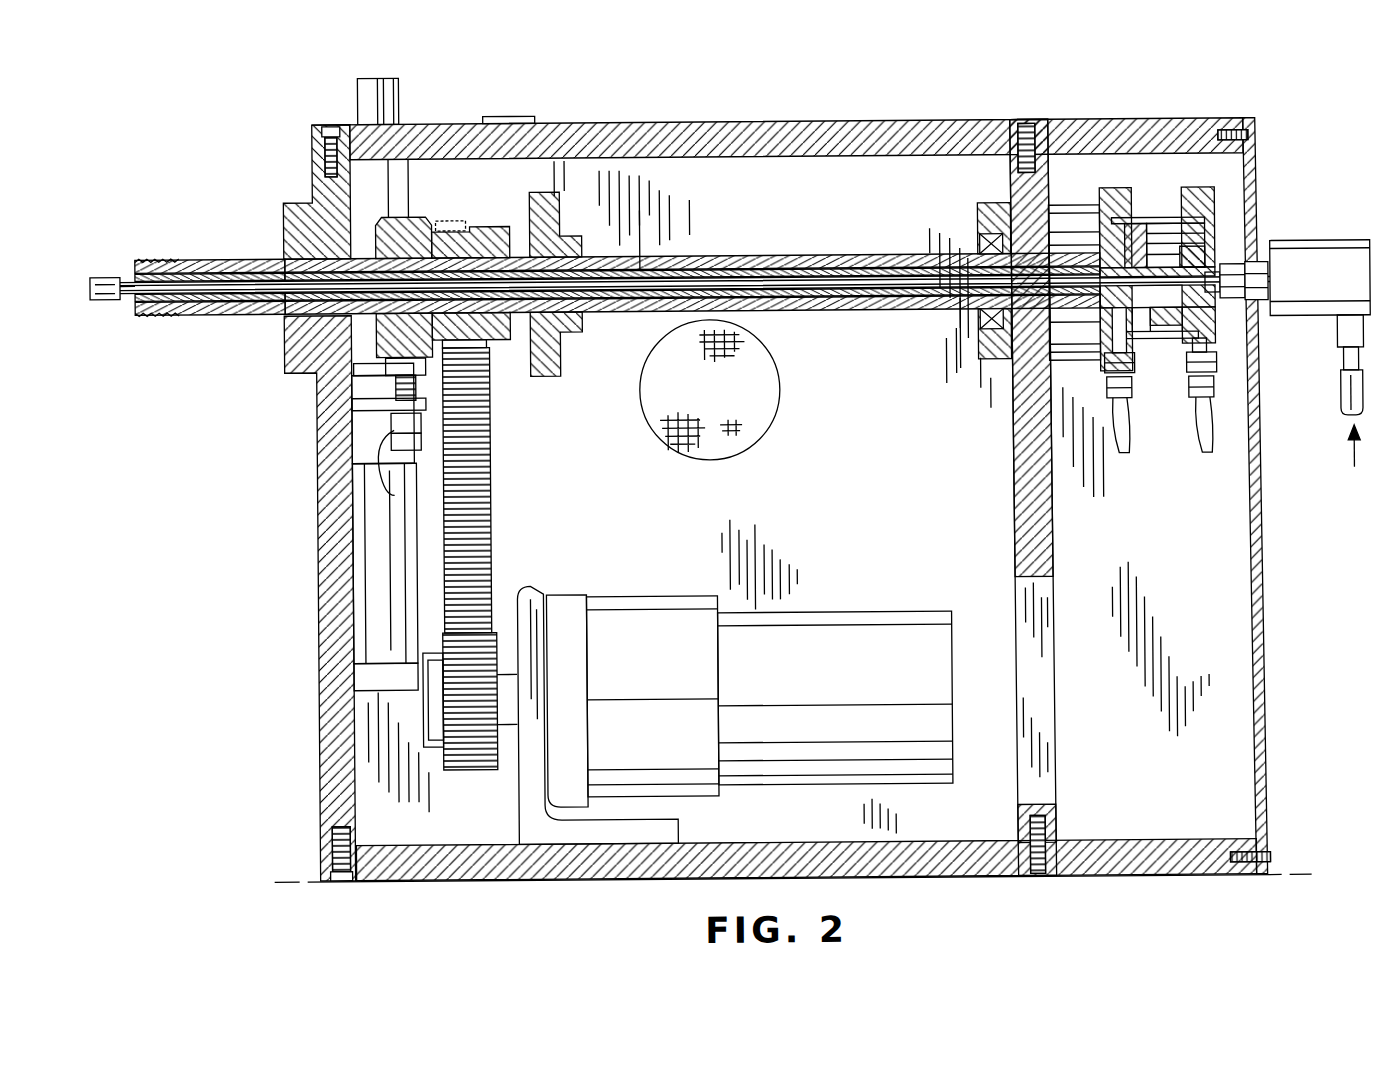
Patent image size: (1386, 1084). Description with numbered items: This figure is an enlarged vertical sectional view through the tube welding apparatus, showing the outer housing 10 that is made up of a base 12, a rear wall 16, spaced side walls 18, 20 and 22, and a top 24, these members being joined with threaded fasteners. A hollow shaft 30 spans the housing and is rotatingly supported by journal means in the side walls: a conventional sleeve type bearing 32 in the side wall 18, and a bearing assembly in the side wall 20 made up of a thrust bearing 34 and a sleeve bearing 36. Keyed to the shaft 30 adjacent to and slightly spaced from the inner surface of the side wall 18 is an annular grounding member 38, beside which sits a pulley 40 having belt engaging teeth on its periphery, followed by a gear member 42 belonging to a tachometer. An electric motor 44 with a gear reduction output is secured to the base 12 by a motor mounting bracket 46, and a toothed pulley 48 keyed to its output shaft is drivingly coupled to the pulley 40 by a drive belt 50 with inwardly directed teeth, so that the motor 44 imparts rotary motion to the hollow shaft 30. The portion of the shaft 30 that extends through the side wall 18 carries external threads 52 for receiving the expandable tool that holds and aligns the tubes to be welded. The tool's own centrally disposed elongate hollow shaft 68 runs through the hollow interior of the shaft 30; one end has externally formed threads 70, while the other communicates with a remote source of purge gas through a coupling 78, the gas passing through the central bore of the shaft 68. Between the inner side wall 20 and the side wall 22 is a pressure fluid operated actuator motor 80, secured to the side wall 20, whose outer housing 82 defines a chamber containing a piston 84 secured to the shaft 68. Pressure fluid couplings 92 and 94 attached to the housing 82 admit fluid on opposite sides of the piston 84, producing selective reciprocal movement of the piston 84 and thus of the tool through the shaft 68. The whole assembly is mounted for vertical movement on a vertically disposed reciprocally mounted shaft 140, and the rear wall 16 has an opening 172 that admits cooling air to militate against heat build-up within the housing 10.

The outer housing 10 is at (1258, 592).
The base 12 is at (528, 877).
The rear wall 16 is at (809, 665).
The side wall 18 is at (317, 542).
The side wall 20 is at (1051, 540).
The side wall 22 is at (1262, 689).
The top 24 is at (850, 121).
The hollow shaft 30 is at (680, 255).
The sleeve type bearing 32 is at (284, 247).
The thrust bearing 34 is at (976, 245).
The sleeve bearing 36 is at (1046, 255).
The annular grounding member 38 is at (430, 218).
The pulley 40 is at (492, 224).
The gear member 42 is at (575, 236).
The electric motor 44 is at (749, 699).
The motor mounting bracket 46 is at (525, 590).
The pulley 48 is at (425, 748).
The drive belt 50 is at (491, 459).
The external threads 52 is at (219, 315).
The hollow shaft 68 is at (776, 281).
The externally formed threads 70 is at (111, 270).
The coupling 78 is at (1341, 245).
The pressure fluid operated actuator motor 80 is at (1145, 195).
The outer housing 82 is at (1176, 221).
The piston 84 is at (1153, 343).
The pressure fluid coupling 92 is at (1108, 404).
The pressure fluid coupling 94 is at (1193, 403).
The reciprocally mounted shaft 140 is at (396, 86).
The opening 172 is at (779, 412).